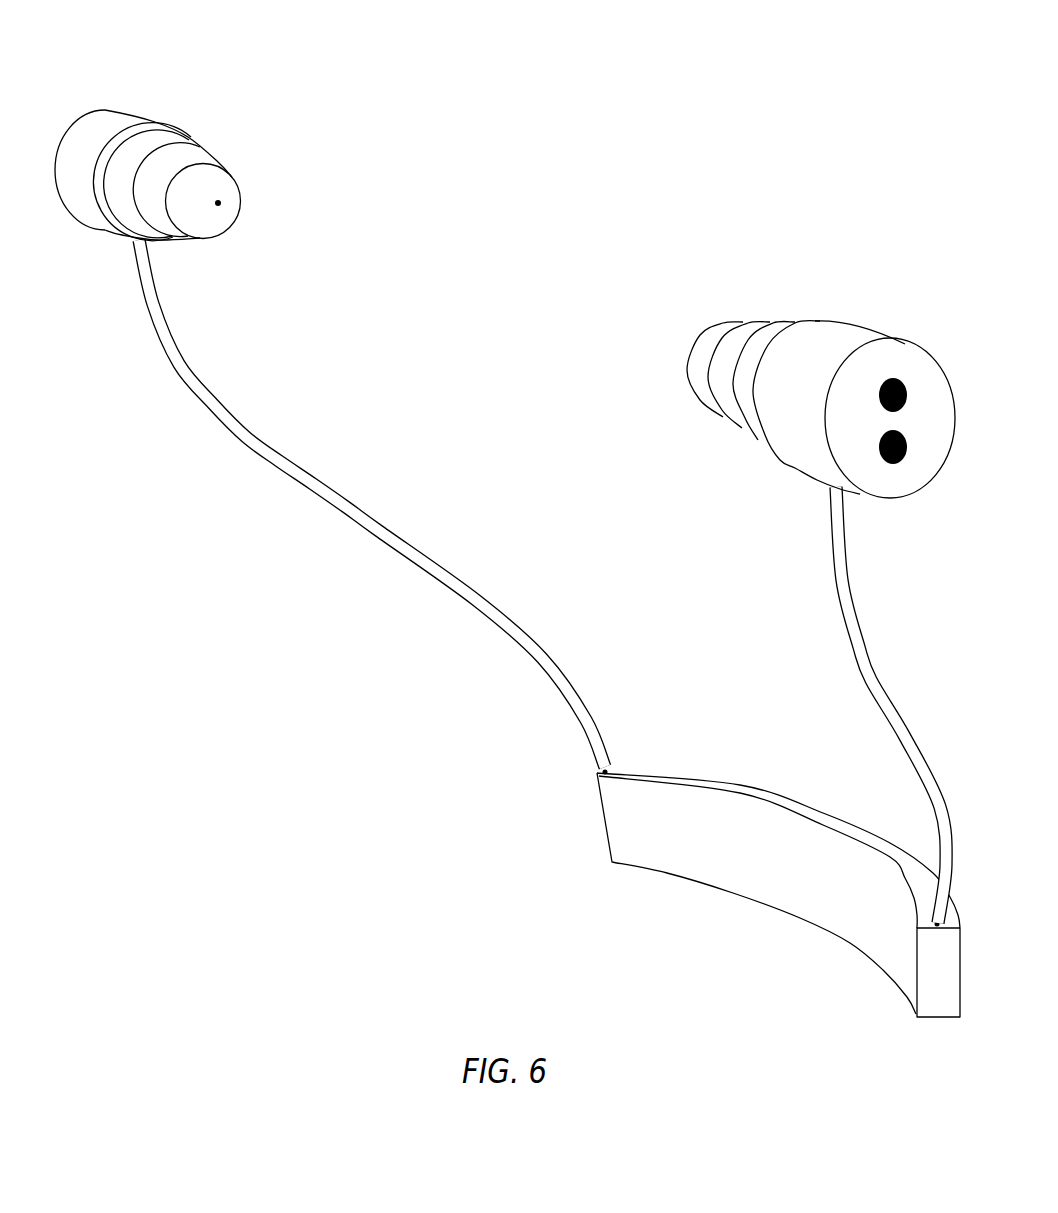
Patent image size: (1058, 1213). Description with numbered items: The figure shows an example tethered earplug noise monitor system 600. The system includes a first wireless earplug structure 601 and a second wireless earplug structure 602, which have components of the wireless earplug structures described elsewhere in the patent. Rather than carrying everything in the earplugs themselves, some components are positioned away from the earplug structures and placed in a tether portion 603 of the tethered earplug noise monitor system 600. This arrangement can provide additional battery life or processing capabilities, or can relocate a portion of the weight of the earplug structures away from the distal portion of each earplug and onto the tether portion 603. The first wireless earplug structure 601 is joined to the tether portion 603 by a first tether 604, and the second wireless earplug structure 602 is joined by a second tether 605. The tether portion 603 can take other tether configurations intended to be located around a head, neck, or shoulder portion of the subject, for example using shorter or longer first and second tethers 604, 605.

The tethered earplug noise monitor system 600 is at (834, 46).
The first wireless earplug structure 601 is at (110, 110).
The second wireless earplug structure 602 is at (852, 324).
The tether portion 603 is at (740, 785).
The first tether 604 is at (347, 507).
The second tether 605 is at (886, 694).